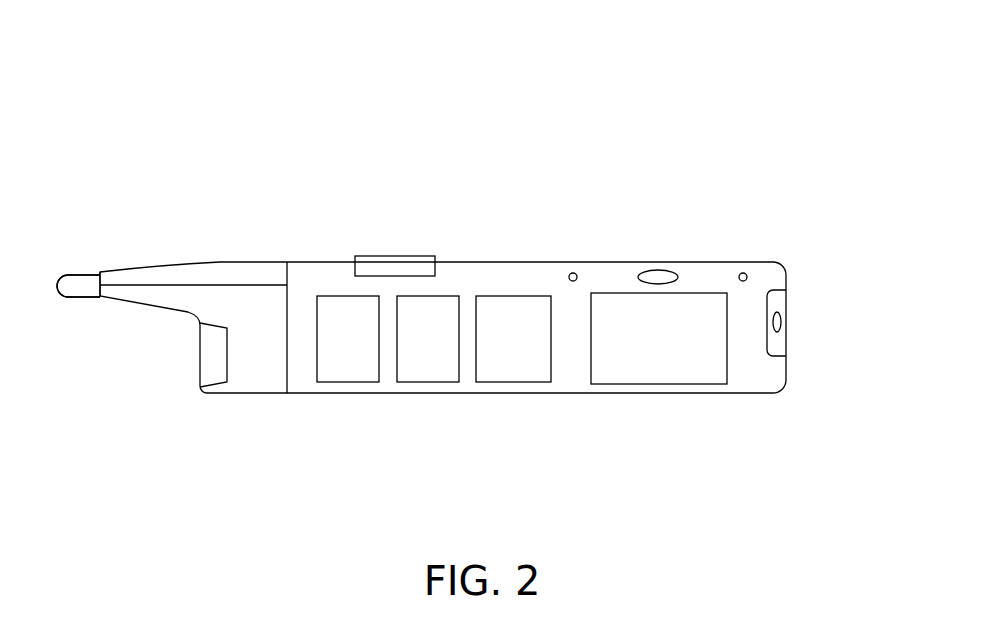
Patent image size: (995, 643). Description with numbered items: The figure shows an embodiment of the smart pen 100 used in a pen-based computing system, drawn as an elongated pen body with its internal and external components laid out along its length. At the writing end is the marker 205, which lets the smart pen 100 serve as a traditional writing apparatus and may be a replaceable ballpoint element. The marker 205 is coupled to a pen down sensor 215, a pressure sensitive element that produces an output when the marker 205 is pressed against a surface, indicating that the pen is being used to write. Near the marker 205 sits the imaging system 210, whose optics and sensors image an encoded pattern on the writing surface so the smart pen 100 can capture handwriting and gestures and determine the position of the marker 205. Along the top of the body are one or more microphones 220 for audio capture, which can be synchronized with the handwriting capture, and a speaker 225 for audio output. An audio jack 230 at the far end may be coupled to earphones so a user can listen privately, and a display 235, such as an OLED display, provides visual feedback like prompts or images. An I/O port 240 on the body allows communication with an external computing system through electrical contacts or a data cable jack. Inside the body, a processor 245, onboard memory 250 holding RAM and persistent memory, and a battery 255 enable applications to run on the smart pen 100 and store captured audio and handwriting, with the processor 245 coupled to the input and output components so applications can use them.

The smart pen 100 is at (188, 62).
The marker 205 is at (80, 283).
The imaging system 210 is at (213, 353).
The pen down sensor 215 is at (287, 333).
The microphones 220 is at (766, 213).
The speaker 225 is at (660, 275).
The audio jack 230 is at (781, 322).
The display 235 is at (662, 350).
The I/O port 240 is at (395, 265).
The processor 245 is at (512, 365).
The onboard memory 250 is at (434, 360).
The battery 255 is at (348, 365).